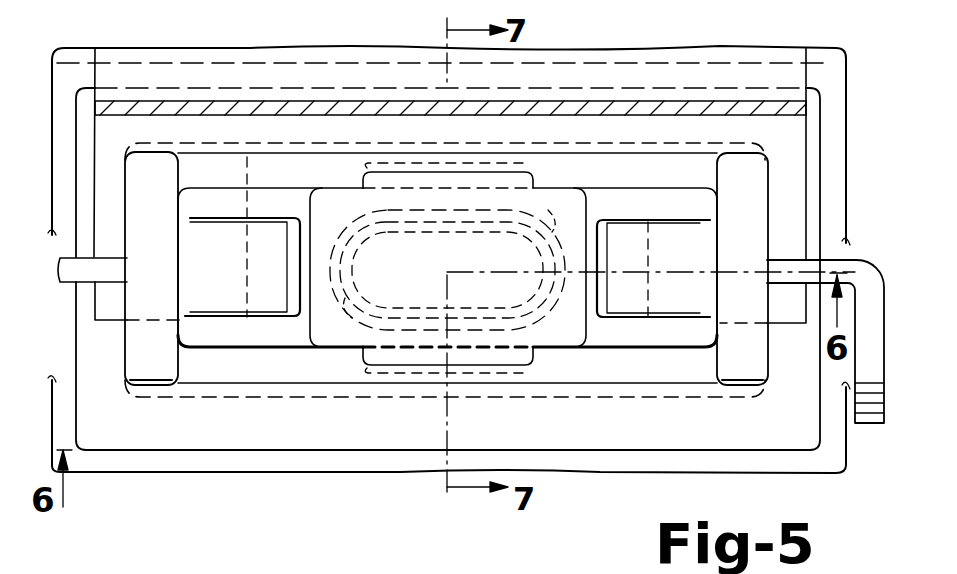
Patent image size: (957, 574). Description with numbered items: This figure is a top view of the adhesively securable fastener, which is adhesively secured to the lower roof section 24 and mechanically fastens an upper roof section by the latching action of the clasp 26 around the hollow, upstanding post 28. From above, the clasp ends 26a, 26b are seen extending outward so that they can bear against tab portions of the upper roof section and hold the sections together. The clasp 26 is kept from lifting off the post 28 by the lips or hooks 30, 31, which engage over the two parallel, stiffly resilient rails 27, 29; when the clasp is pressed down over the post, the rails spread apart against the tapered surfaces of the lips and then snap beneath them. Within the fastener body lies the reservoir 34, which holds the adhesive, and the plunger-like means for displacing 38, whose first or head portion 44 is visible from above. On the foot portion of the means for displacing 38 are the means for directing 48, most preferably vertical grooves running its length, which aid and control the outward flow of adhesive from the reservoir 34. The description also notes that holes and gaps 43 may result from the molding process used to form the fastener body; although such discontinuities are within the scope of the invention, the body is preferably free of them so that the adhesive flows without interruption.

The lower roof section 24 is at (120, 123).
The clasp end 26a is at (148, 160).
The clasp end 26b is at (731, 172).
The clasp 26 is at (668, 347).
The rail 27 is at (237, 373).
The hollow, upstanding post 28 is at (567, 347).
The rail 29 is at (207, 182).
The lip or hook 30 is at (388, 362).
The lip or hook 31 is at (382, 176).
The reservoir 34 is at (347, 232).
The means for displacing 38 is at (395, 261).
The holes and gaps 43 is at (523, 163).
The first or head portion 44 is at (447, 275).
The means for directing 48 is at (545, 215).